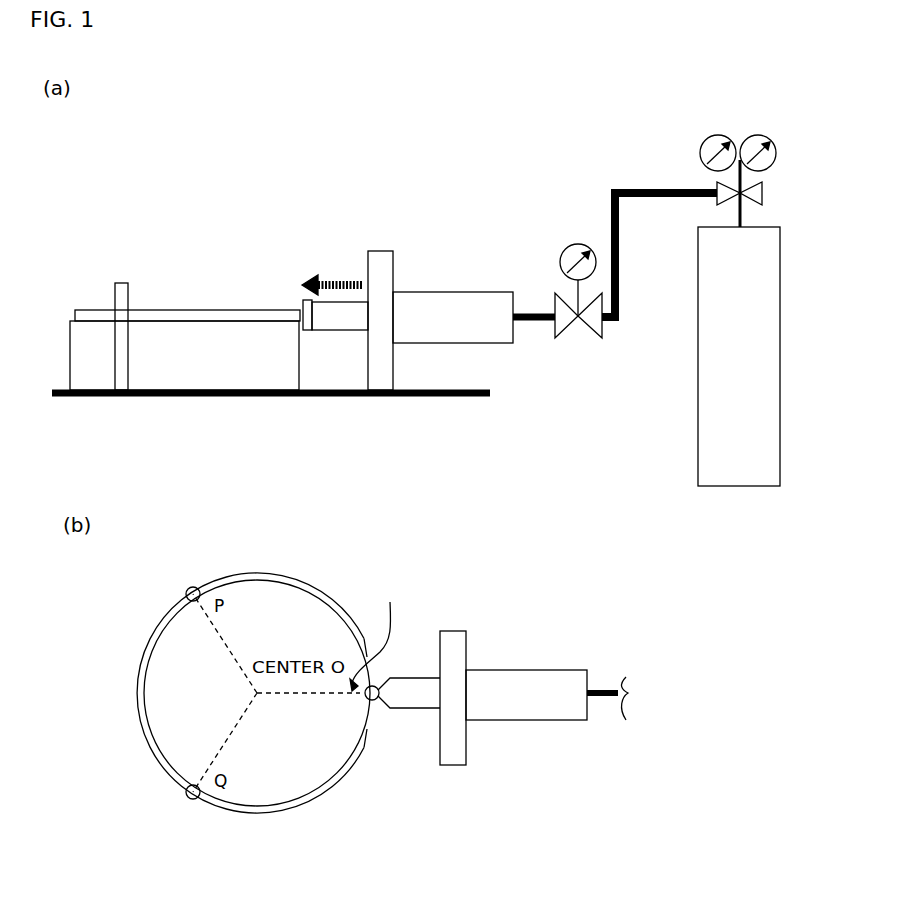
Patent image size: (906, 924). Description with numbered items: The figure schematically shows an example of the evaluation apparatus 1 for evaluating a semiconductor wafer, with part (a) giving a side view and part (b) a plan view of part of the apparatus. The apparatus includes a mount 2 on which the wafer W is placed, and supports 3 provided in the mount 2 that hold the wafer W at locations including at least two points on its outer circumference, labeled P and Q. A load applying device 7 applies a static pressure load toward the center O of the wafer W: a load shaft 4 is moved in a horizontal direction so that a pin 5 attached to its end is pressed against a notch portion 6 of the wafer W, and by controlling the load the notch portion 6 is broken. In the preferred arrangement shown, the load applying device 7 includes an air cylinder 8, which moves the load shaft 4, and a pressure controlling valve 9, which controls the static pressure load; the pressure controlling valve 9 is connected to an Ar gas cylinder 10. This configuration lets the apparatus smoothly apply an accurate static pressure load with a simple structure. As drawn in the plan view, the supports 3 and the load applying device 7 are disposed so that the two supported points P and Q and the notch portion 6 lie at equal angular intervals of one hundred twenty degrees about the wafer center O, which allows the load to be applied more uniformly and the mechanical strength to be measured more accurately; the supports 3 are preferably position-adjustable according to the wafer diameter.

The evaluation apparatus 1 is at (186, 188).
The mount 2 is at (170, 360).
The supports 3 is at (112, 292).
The load shaft 4 is at (344, 328).
The pin 5 is at (303, 300).
The notch portion 6 is at (346, 483).
The load applying device 7 is at (488, 260).
The air cylinder 8 is at (417, 297).
The pressure controlling valve 9 is at (597, 323).
The Ar gas cylinder 10 is at (705, 358).
The semiconductor wafer W is at (183, 312).